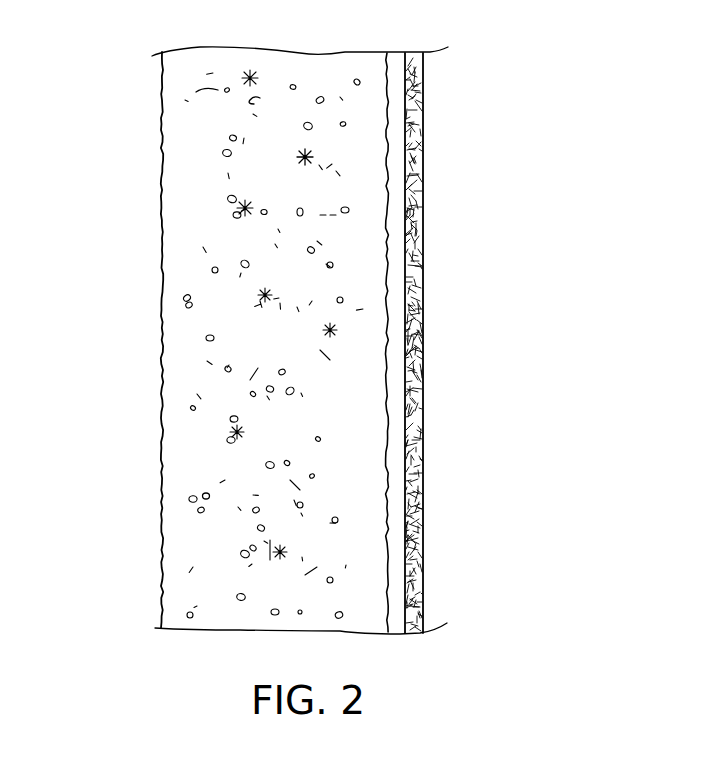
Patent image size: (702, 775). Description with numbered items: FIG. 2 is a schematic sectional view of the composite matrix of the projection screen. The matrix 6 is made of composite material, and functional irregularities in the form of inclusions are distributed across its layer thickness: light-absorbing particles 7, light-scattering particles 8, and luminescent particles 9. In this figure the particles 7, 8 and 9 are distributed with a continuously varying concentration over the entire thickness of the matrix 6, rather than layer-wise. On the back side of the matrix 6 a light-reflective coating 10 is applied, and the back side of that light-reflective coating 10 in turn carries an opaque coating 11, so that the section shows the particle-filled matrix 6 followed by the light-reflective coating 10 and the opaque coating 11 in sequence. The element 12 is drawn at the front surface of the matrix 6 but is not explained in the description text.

The porous layer 6 is at (237, 603).
The pore 7 is at (207, 90).
The particle 8 is at (202, 498).
The fibrous particle 9 is at (308, 160).
The inner surface 10 is at (392, 315).
The coating layer 11 is at (425, 420).
The outer surface 12 is at (161, 378).